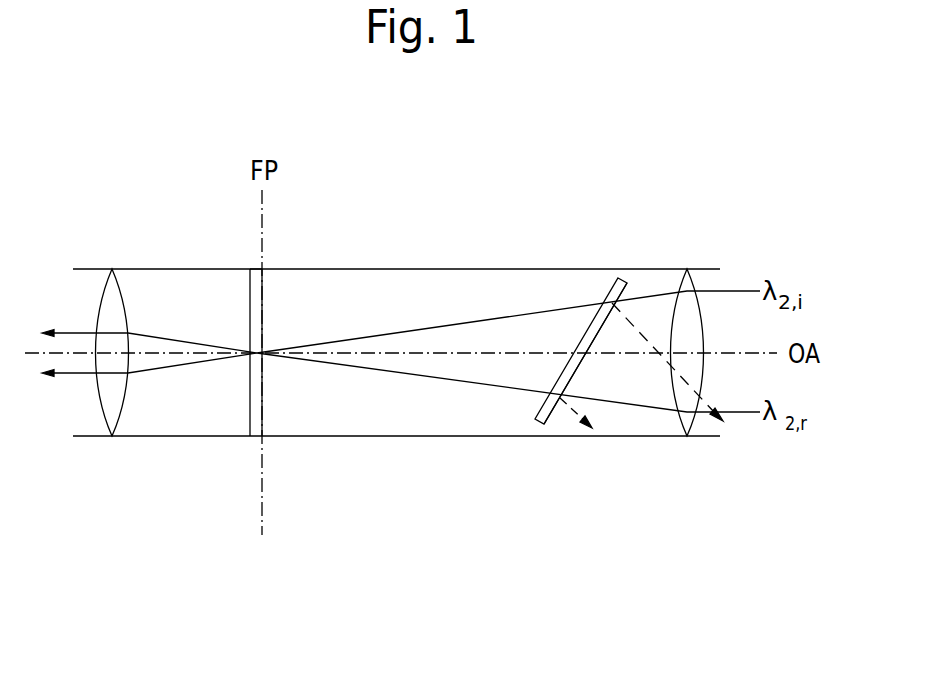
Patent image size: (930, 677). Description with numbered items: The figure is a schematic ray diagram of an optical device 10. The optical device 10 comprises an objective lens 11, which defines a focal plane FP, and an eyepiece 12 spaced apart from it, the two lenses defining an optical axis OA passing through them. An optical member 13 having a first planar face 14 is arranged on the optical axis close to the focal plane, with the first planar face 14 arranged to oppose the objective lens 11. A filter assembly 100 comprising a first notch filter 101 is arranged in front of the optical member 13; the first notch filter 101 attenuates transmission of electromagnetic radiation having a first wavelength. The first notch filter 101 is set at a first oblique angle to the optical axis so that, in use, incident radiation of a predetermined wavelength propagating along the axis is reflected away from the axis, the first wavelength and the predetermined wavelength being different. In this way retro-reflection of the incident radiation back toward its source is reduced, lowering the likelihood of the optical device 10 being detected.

The optical device 10 is at (686, 525).
The objective lens 11 is at (693, 420).
The eyepiece 12 is at (123, 417).
The optical member 13 is at (254, 268).
The first planar face 14 is at (262, 408).
The filter assembly 100 is at (616, 281).
The first notch filter 101 is at (549, 420).